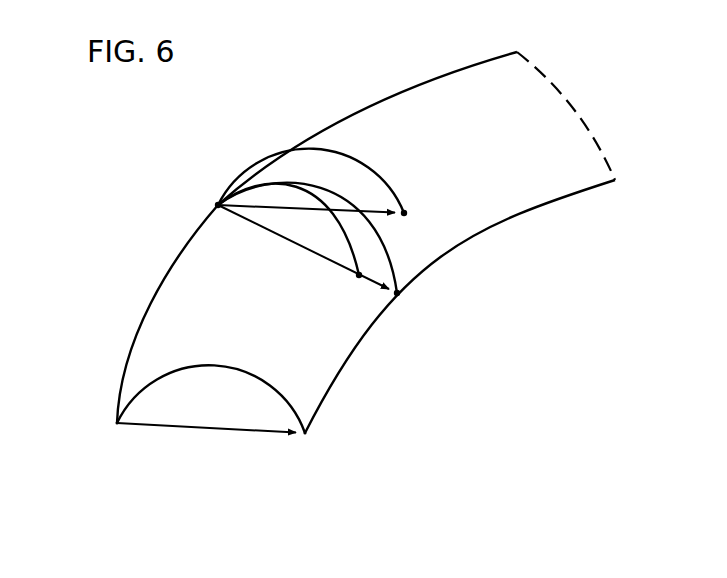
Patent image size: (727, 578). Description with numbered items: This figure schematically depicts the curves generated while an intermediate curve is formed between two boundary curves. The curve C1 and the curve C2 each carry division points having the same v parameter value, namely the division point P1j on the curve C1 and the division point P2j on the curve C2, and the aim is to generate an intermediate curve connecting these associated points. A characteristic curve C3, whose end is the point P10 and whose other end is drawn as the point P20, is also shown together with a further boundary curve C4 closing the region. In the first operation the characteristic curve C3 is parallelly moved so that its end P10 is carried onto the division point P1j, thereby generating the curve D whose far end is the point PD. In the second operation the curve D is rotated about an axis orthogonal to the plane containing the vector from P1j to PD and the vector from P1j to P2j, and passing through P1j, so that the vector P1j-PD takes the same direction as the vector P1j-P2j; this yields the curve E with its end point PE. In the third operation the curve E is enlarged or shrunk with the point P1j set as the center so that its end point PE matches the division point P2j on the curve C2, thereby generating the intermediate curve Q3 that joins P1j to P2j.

The curve C1 is at (150, 300).
The curve C2 is at (366, 331).
The characteristic curve C3 is at (217, 367).
The fourth boundary curve C4 is at (562, 86).
The end of characteristic curve P10 is at (117, 426).
The corner point P20(1,1) P20 is at (306, 436).
The division point on curve C1 P1j is at (210, 199).
The division point on curve C2 P2j is at (401, 295).
The curve D is at (348, 156).
The curve E is at (311, 192).
The intermediate curve Q3 is at (380, 243).
The end of curve D PD is at (411, 210).
The end point of curve E PE is at (366, 272).